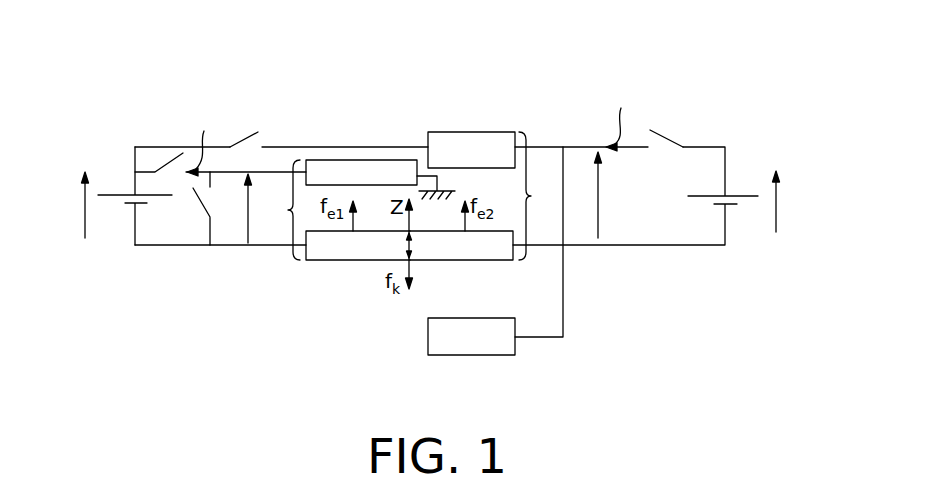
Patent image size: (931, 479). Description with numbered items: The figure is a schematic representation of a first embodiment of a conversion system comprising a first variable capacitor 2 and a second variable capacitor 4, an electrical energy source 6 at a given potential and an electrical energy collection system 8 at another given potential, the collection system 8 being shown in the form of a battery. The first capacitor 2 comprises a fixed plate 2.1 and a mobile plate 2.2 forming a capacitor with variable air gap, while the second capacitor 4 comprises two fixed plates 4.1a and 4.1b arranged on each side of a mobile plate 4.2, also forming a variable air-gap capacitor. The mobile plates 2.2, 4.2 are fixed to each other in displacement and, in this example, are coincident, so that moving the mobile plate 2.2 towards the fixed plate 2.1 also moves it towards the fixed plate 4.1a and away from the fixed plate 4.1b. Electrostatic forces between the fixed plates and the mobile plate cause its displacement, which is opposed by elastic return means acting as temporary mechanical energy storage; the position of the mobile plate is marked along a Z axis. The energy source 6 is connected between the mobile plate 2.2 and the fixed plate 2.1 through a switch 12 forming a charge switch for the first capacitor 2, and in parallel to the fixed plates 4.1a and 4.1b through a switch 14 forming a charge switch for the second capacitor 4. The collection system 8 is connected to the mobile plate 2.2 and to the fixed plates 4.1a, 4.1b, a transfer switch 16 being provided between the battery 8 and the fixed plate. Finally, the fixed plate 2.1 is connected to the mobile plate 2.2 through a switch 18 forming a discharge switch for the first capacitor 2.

The first variable capacitor 2 is at (345, 202).
The fixed plate 2.1 is at (377, 170).
The mobile plate 2.2 is at (358, 246).
The second variable capacitor 4 is at (485, 196).
The fixed plate 4.1a is at (483, 147).
The fixed plate 4.1b is at (428, 340).
The mobile plate 4.2 is at (458, 246).
The electrical energy source 6 is at (110, 256).
The electrical energy collection system 8 is at (755, 116).
The switch 12 is at (165, 158).
The switch 14 is at (243, 134).
The transfer switch 16 is at (665, 131).
The switch 18 is at (197, 200).